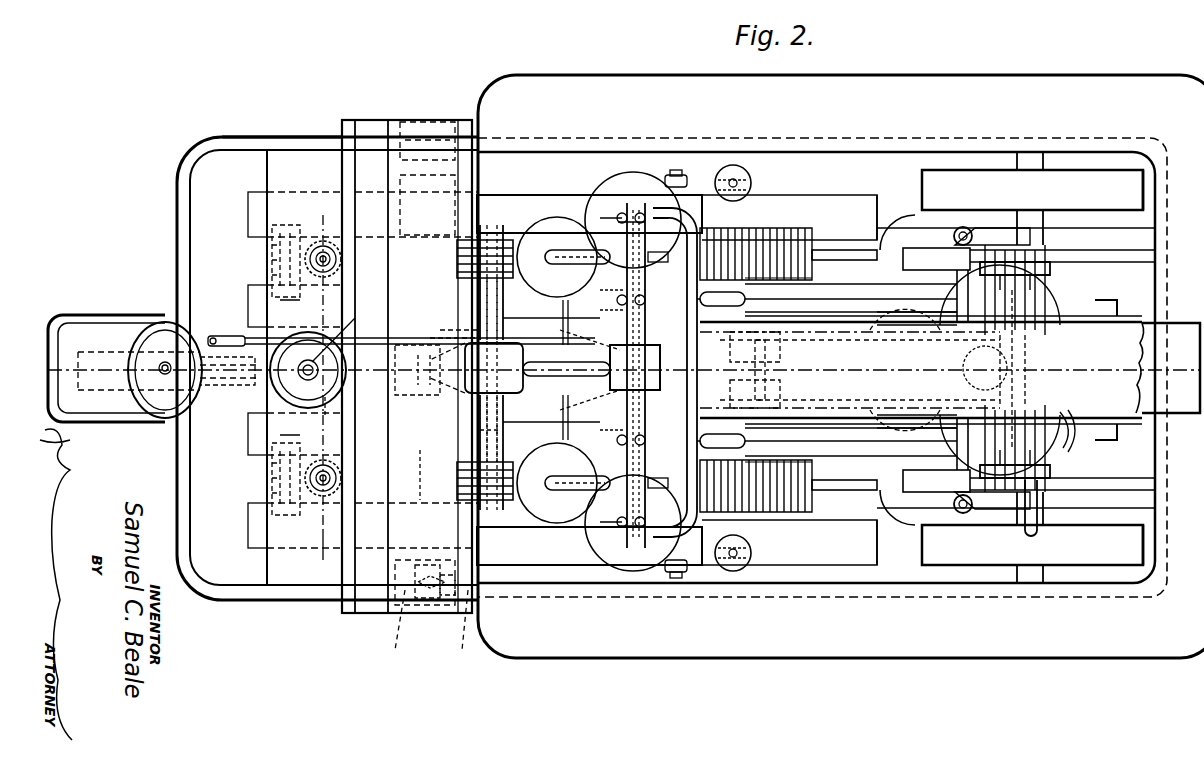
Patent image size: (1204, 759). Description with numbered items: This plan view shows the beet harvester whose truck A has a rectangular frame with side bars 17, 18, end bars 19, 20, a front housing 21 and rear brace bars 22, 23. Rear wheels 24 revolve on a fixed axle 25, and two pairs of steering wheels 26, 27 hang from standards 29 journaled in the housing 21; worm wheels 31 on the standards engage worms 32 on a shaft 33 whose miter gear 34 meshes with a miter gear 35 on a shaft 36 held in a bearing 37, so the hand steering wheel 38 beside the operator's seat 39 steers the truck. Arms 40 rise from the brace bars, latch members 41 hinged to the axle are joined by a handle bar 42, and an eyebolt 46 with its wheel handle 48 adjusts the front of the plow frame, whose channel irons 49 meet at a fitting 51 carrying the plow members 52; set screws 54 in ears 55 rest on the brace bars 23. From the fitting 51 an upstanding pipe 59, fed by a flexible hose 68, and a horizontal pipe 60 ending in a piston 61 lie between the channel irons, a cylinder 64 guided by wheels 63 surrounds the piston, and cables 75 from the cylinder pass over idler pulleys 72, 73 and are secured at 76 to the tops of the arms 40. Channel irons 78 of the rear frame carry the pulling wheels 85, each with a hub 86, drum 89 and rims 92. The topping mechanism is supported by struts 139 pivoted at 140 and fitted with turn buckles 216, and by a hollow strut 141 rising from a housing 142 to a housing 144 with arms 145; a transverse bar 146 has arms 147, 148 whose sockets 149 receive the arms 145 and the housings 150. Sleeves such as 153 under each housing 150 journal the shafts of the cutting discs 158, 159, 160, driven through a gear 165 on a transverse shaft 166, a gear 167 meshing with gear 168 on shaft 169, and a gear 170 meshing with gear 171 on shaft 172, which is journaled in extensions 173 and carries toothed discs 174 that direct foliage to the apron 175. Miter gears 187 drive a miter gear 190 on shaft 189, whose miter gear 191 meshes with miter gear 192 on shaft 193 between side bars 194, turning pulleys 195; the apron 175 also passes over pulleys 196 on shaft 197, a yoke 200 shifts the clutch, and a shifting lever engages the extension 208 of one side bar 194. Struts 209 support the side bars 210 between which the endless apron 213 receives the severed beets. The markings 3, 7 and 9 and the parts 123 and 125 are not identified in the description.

The section line 3 is at (1188, 384).
The section line 7 is at (646, 570).
The section line 9 is at (340, 557).
The side bar 17 is at (340, 593).
The side bar 18 is at (310, 140).
The end bar 19 is at (192, 463).
The end bar 20 is at (1165, 283).
The transverse frame or housing 21 is at (266, 563).
The brace bar 22 is at (1115, 505).
The brace bar 23 is at (1080, 232).
The rear wheel 24 is at (945, 175).
The non-rotatable axle 25 is at (1045, 152).
The front steering wheel 26 is at (262, 475).
The front steering wheel 27 is at (257, 251).
The standard 29 is at (330, 257).
The worm wheel 31 is at (323, 232).
The worm 32 is at (270, 268).
The shaft 33 is at (292, 308).
The miter gear 34 is at (245, 395).
The miter gear 35 is at (310, 352).
The shaft 36 is at (165, 365).
The bearing 37 is at (240, 378).
The hand steering wheel 38 is at (168, 418).
The operator's seat 39 is at (108, 410).
The upwardly extending arm 40 is at (1090, 248).
The latch member 41 is at (1020, 270).
The handle bar 42 is at (1037, 525).
The eyebolt 46 is at (355, 318).
The wheel handle 48 is at (309, 411).
The channel iron 49 is at (800, 370).
The fitting 51 is at (922, 485).
The plow member 52 is at (752, 220).
The set screw 54 is at (972, 236).
The ear 55 is at (963, 226).
The upstanding pipe 59 is at (985, 368).
The horizontally disposed pipe 60 is at (850, 363).
The piston 61 is at (755, 366).
The wheel 63 is at (735, 292).
The cylinder 64 is at (829, 448).
The flexible hose 68 is at (1079, 432).
The idler pulley 72 is at (1025, 330).
The idler pulley 73 is at (1020, 290).
The cable 75 is at (1050, 318).
The cable securing point 76 is at (936, 370).
The channel iron 78 is at (522, 295).
The beet pulling mechanism supporting wheel 85 is at (836, 236).
The hub 86 is at (665, 176).
The drum 89 is at (810, 272).
The wheel rim 92 is at (805, 203).
The pivot 123 is at (733, 183).
The disc 125 is at (751, 180).
The inclined strut 139 is at (916, 367).
The pivot point 140 is at (905, 378).
The inclined hollow strut 141 is at (582, 378).
The housing 142 is at (478, 405).
The housing 144 is at (648, 356).
The transverse hollow arm 145 is at (650, 380).
The transverse bar 146 is at (850, 370).
The arm 147 is at (700, 370).
The arm 148 is at (690, 213).
The socket 149 is at (618, 366).
The housing 150 is at (618, 371).
The sleeve 153 is at (578, 243).
The cutting disc 158 is at (620, 188).
The cutting disc 159 is at (590, 369).
The cutting disc 160 is at (546, 218).
The gear 165 is at (611, 279).
The transverse shaft 166 is at (608, 367).
The gear 167 is at (650, 366).
The gear 168 is at (610, 355).
The shaft 169 is at (566, 360).
The gear 170 is at (494, 368).
The gear 171 is at (448, 383).
The horizontally disposed shaft 172 is at (480, 438).
The extension 173 is at (487, 298).
The toothed disc 174 is at (456, 258).
The apron 175 is at (445, 225).
The miter gear 187 is at (450, 312).
The transversely disposed shaft 189 is at (413, 475).
The miter gear 190 is at (416, 379).
The miter gear 191 is at (447, 562).
The miter gear 192 is at (449, 605).
The shaft 193 is at (423, 600).
The side bar 194 is at (385, 600).
The pulley 195 is at (425, 627).
The pulley 196 is at (455, 110).
The shaft 197 is at (427, 197).
The yoke 200 is at (453, 330).
The hopper like extension 208 is at (340, 560).
The strut 209 is at (1095, 298).
The side bar 210 is at (917, 367).
The endless apron 213 is at (1145, 420).
The turn buckle 216 is at (769, 370).
The truck A is at (285, 593).